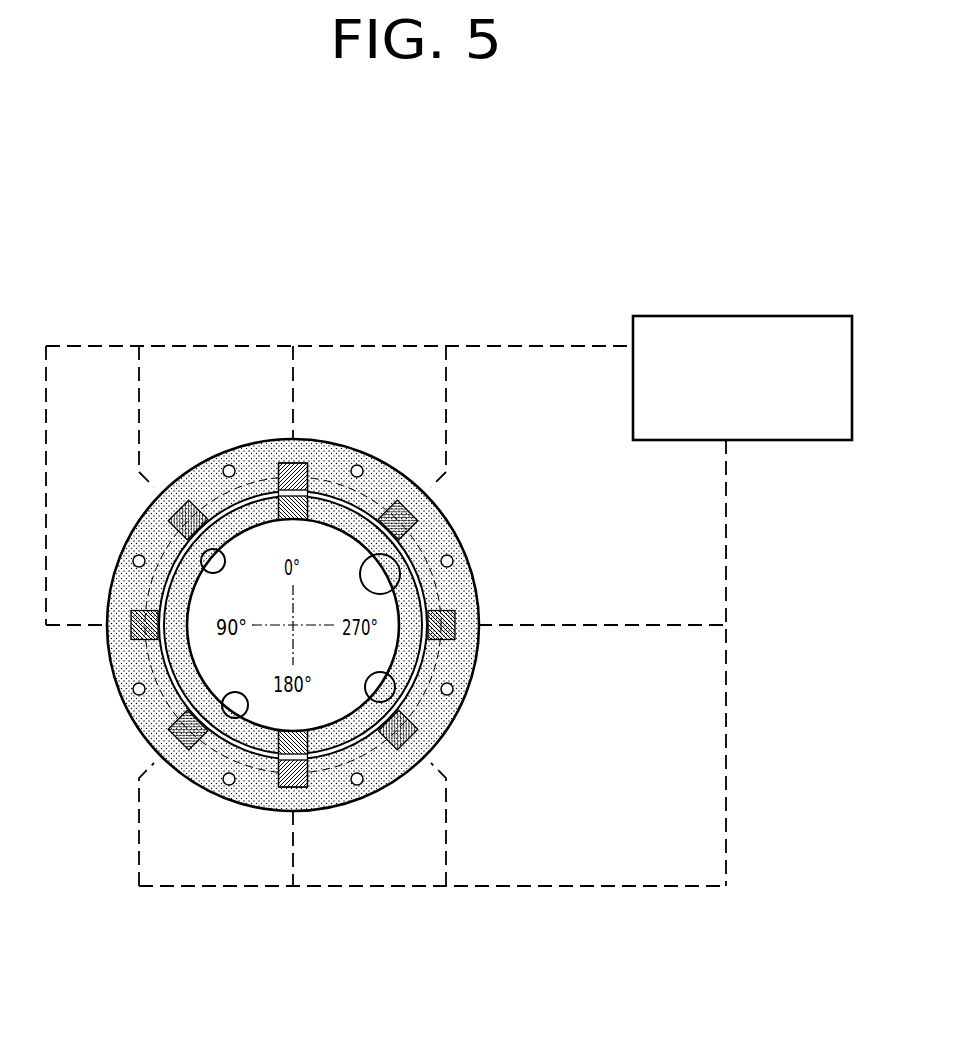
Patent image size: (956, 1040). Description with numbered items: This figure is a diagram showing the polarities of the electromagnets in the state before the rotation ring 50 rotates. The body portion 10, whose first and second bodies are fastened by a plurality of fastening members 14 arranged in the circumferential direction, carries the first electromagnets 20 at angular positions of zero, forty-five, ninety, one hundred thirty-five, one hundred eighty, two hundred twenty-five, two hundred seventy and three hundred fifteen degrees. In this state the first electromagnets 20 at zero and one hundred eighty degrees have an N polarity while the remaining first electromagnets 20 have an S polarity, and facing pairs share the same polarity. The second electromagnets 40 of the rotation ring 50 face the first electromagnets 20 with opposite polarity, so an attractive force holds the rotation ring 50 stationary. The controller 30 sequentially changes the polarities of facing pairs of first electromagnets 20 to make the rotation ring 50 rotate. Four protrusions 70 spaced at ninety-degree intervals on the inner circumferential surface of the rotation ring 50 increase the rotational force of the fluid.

The body portion 10 is at (293, 592).
The fastening member 14 is at (295, 625).
The first electromagnet 20 is at (303, 628).
The controller 30 is at (795, 316).
The second electromagnet 40 is at (331, 631).
The rotation ring 50 is at (346, 625).
The protrusion 70 is at (308, 665).